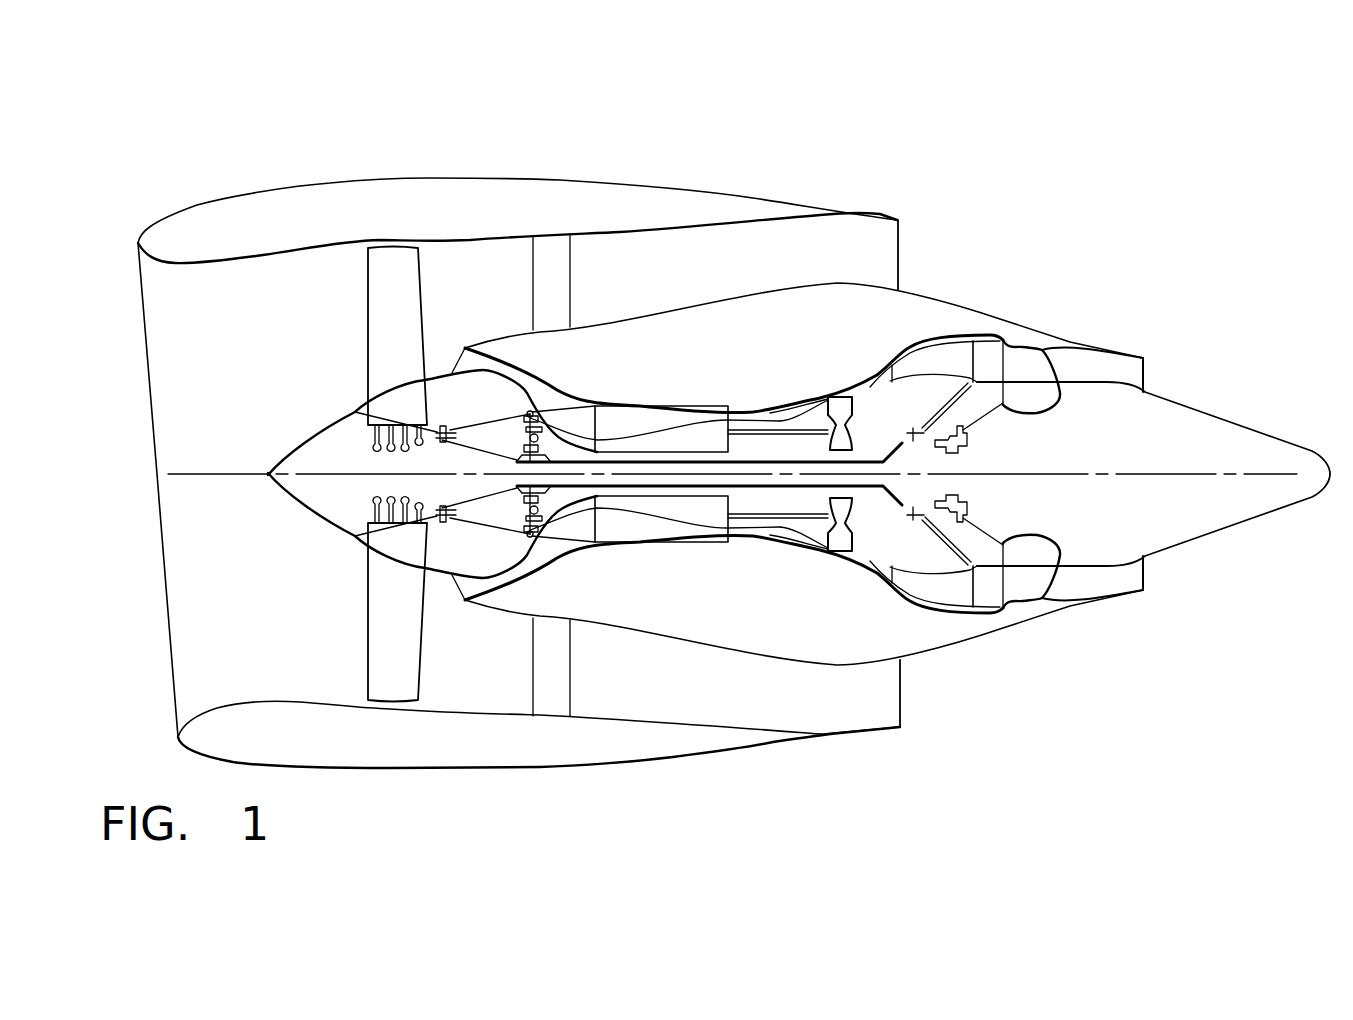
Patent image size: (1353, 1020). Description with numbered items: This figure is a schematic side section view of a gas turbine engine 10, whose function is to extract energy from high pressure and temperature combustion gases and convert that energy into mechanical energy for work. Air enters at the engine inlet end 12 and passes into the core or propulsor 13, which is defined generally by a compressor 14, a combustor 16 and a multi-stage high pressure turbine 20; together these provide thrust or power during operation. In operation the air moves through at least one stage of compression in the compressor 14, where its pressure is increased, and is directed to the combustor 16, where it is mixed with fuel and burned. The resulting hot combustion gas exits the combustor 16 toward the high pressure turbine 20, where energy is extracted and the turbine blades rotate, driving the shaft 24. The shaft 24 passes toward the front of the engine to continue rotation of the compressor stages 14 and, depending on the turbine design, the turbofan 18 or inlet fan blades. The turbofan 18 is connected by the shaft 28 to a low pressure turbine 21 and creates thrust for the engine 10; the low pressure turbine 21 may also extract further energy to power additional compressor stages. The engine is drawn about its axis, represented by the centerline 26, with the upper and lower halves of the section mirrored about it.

The gas turbine engine 10 is at (796, 149).
The engine inlet end 12 is at (128, 292).
The core or propulsor 13 is at (730, 340).
The compressor 14 is at (618, 417).
The combustor 16 is at (796, 410).
The turbofan 18 is at (390, 318).
The multi-stage high pressure turbine 20 is at (842, 401).
The low pressure turbine 21 is at (932, 353).
The shaft 24 is at (807, 521).
The engine centerline axis 26 is at (197, 470).
The shaft 28 is at (868, 460).